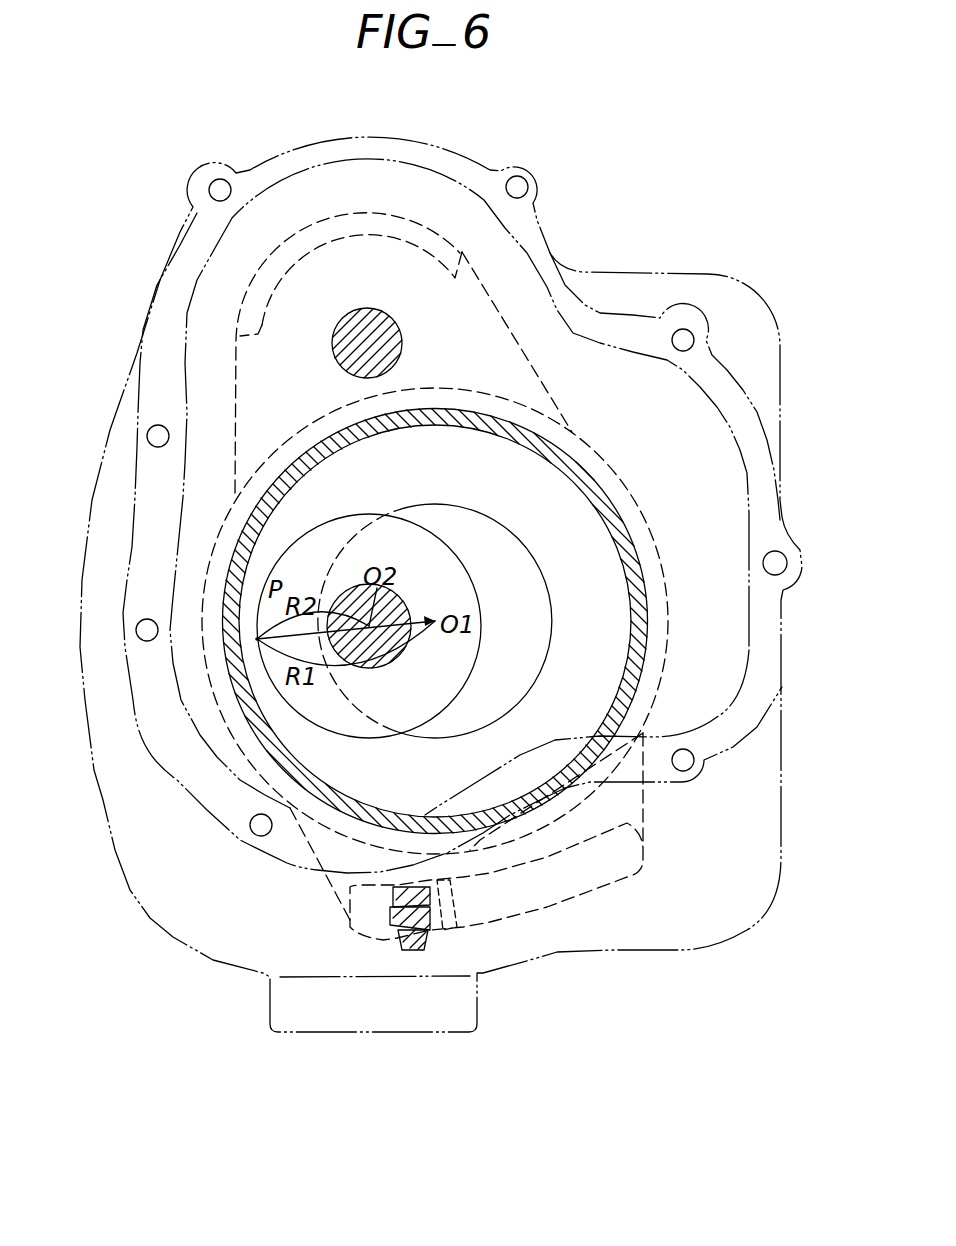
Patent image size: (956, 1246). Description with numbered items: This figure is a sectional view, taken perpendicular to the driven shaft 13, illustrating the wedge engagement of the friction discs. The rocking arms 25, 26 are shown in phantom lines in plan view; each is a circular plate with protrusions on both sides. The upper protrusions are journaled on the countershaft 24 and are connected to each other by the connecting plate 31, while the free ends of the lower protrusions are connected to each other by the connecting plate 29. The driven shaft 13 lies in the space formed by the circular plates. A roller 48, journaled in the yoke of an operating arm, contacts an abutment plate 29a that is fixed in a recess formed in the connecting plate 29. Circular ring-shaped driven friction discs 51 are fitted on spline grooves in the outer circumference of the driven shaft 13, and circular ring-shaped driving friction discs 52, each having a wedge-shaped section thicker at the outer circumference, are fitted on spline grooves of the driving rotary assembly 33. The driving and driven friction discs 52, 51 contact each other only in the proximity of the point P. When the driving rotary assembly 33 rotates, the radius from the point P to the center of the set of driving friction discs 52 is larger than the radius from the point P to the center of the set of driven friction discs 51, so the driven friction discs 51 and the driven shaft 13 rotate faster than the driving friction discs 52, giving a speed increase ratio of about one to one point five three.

The driven shaft 13 is at (407, 600).
The countershaft 24 is at (400, 320).
The rocking arm 25 is at (590, 320).
The rocking arm 26 is at (520, 342).
The connecting plate 29 is at (643, 825).
The abutment plate 29a is at (440, 933).
The connecting plate 31 is at (258, 322).
The driving rotary assembly 33 is at (600, 493).
The roller 48 is at (385, 922).
The driven friction discs 51 is at (473, 660).
The driving friction discs 52 is at (593, 560).